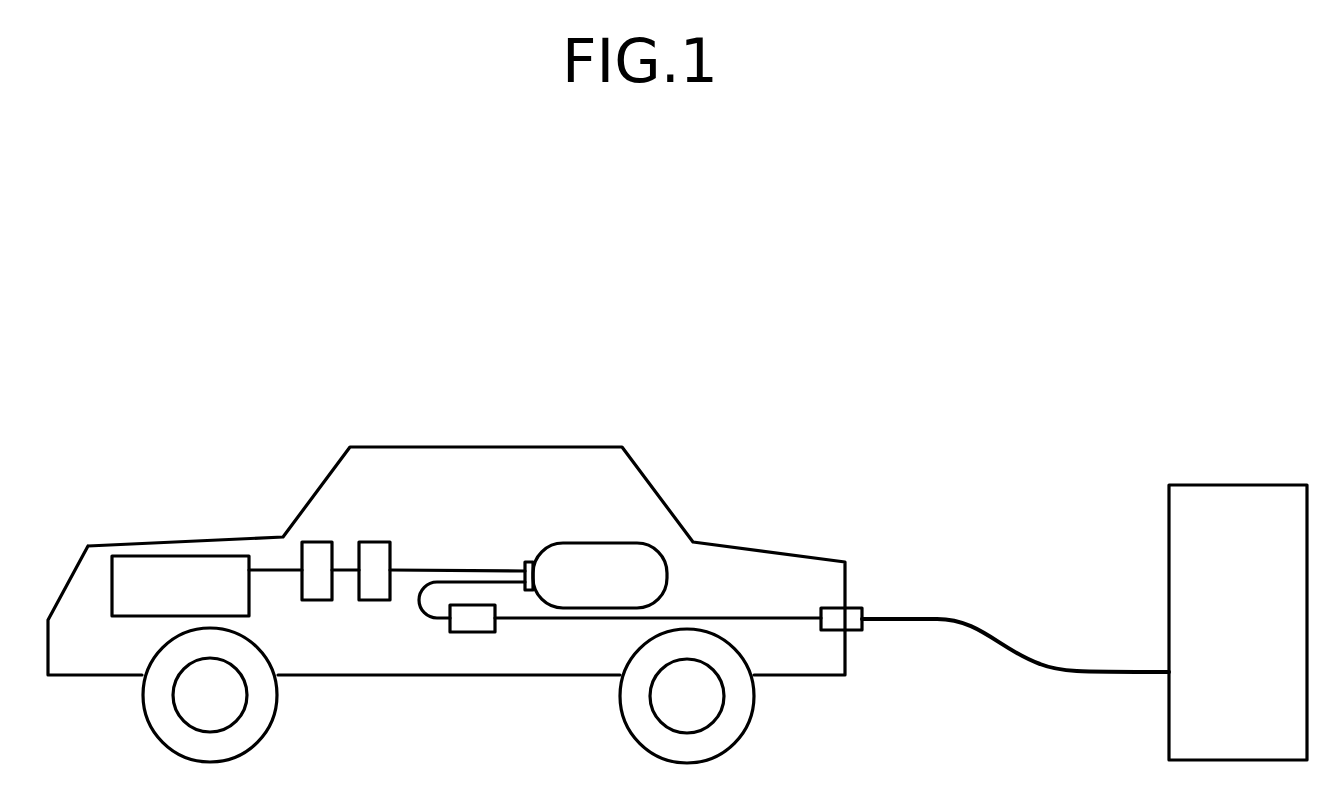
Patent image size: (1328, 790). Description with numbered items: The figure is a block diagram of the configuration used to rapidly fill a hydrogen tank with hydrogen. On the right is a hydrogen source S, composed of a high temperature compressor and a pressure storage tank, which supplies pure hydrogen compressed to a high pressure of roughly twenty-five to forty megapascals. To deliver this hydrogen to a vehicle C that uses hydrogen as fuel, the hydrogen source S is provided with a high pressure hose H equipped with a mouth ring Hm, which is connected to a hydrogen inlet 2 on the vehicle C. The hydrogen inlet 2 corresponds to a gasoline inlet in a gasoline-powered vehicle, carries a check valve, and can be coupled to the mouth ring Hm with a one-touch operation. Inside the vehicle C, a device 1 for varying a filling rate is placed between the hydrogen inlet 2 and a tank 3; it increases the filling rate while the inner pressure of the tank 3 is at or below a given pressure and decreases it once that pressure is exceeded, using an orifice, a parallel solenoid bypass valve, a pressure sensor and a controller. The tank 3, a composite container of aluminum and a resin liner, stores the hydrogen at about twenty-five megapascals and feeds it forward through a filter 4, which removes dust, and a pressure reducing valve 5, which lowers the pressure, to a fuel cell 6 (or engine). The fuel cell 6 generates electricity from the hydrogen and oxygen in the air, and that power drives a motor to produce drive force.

The vehicle C is at (579, 407).
The device for varying a filling rate 1 is at (470, 622).
The hydrogen inlet 2 is at (832, 612).
The hydrogen tank 3 is at (602, 555).
The filter 4 is at (378, 548).
The pressure reducing valve 5 is at (313, 548).
The fuel cell 6 is at (152, 568).
The high pressure hose H is at (990, 632).
The mouth ring Hm is at (851, 608).
The hydrogen source S is at (1237, 485).